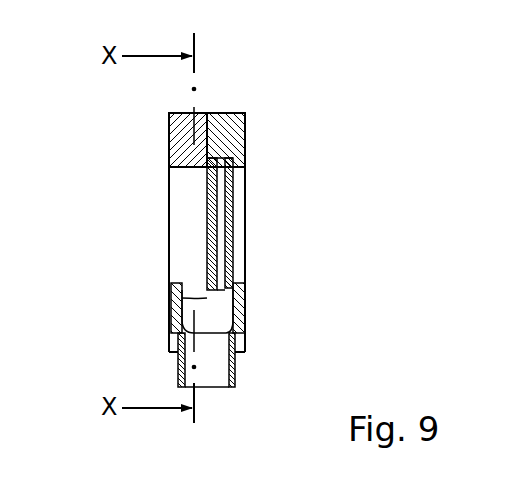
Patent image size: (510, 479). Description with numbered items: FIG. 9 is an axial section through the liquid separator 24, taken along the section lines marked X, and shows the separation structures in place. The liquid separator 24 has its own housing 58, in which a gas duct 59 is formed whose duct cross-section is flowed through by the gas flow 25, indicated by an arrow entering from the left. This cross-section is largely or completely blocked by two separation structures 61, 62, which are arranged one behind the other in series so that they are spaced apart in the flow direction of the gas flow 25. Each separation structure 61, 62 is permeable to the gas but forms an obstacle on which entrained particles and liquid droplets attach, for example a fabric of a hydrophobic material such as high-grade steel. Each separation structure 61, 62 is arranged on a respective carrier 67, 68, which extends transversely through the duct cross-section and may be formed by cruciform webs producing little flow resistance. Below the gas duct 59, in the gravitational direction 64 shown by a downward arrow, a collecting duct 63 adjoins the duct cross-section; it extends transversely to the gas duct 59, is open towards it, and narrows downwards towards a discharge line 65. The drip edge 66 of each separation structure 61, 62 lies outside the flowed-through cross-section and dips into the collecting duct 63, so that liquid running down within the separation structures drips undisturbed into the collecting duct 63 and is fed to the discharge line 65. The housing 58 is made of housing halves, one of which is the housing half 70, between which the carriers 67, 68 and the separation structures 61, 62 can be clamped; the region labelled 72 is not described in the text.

The liquid separator 24 is at (280, 106).
The gas flow 25 is at (97, 208).
The housing 58 is at (248, 135).
The gas duct 59 is at (188, 258).
The separation structure 61 is at (206, 218).
The separation structure 62 is at (234, 218).
The collecting duct 63 is at (222, 320).
The gravitational direction 64 is at (333, 240).
The discharge line 65 is at (195, 384).
The drip edge 66 is at (171, 287).
The carrier 67 is at (206, 193).
The carrier 68 is at (234, 193).
The housing half 70 is at (178, 136).
The plate half 72 is at (230, 123).